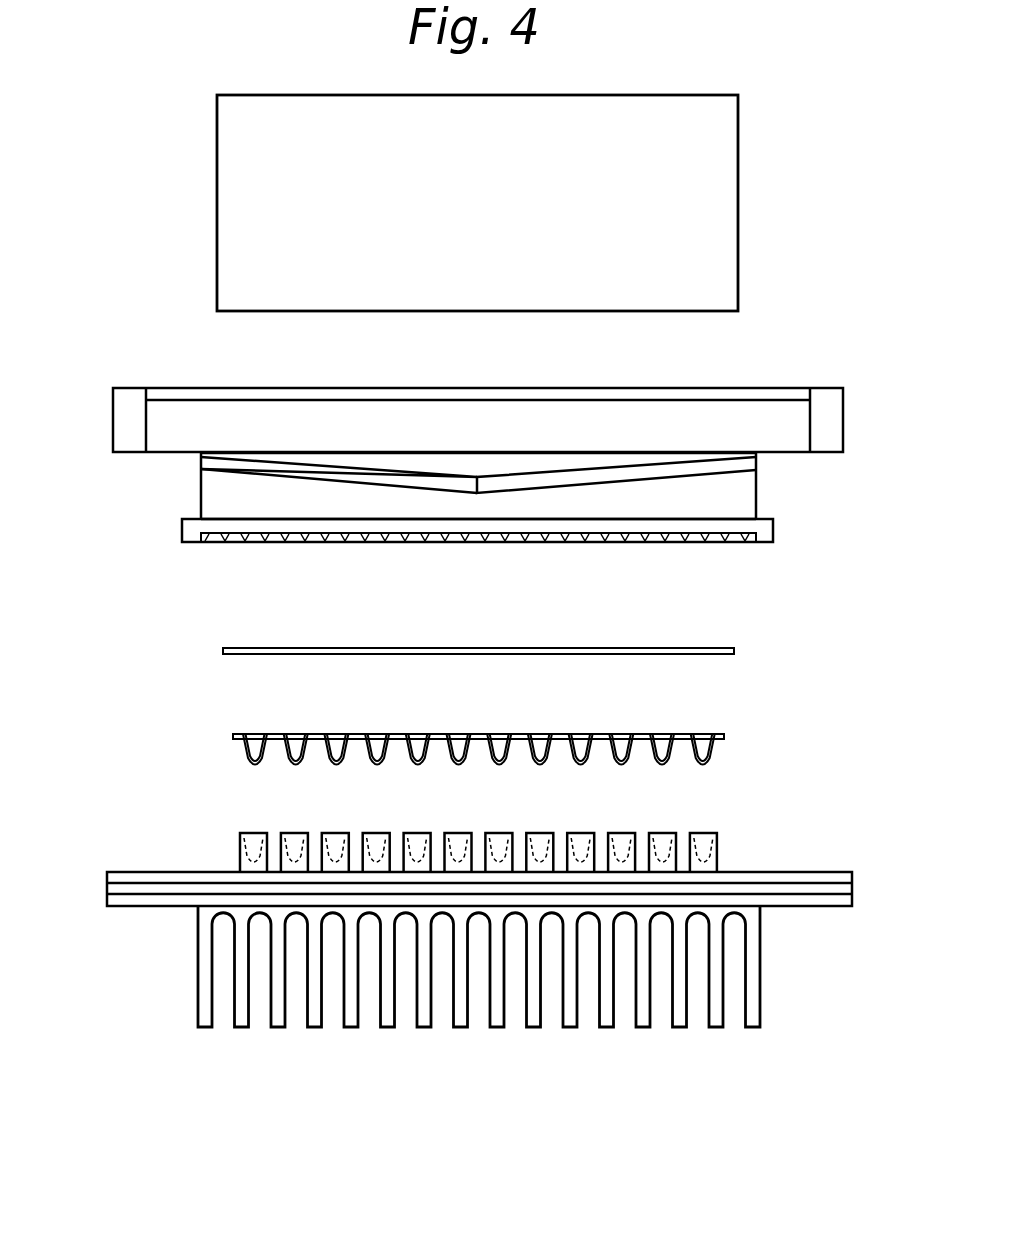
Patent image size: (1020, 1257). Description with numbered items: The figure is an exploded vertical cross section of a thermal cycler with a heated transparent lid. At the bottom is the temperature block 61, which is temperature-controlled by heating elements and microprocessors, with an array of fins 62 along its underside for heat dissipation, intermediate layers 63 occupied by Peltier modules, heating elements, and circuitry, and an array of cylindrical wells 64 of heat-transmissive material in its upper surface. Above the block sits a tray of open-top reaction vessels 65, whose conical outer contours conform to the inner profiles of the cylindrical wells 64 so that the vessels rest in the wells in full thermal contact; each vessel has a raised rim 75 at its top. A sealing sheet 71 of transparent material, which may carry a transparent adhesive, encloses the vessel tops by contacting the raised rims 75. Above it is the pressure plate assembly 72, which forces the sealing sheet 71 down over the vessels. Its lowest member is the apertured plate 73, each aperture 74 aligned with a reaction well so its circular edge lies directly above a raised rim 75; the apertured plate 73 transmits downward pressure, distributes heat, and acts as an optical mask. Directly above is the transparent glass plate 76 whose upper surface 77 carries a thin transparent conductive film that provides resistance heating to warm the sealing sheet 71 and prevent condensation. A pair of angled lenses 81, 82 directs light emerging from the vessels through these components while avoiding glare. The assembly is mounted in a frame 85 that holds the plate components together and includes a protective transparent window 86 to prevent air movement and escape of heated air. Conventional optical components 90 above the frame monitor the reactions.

The optical components 90 is at (738, 210).
The protective transparent window 86 is at (725, 388).
The frame 85 is at (843, 412).
The lens 81 is at (400, 470).
The lens 82 is at (535, 470).
The pressure plate assembly 72 is at (458, 510).
The upper surface coating 77 is at (235, 518).
The transparent glass plate 76 is at (190, 530).
The apertured plate 73 is at (215, 535).
The aperture 74 is at (253, 538).
The sealing sheet 71 is at (709, 648).
The raised rim 75 is at (243, 735).
The open-top reaction vessels 65 is at (478, 727).
The temperature block 61 is at (484, 965).
The cylindrical wells 64 is at (745, 833).
The intermediate layers 63 is at (868, 868).
The fins 62 is at (578, 1002).